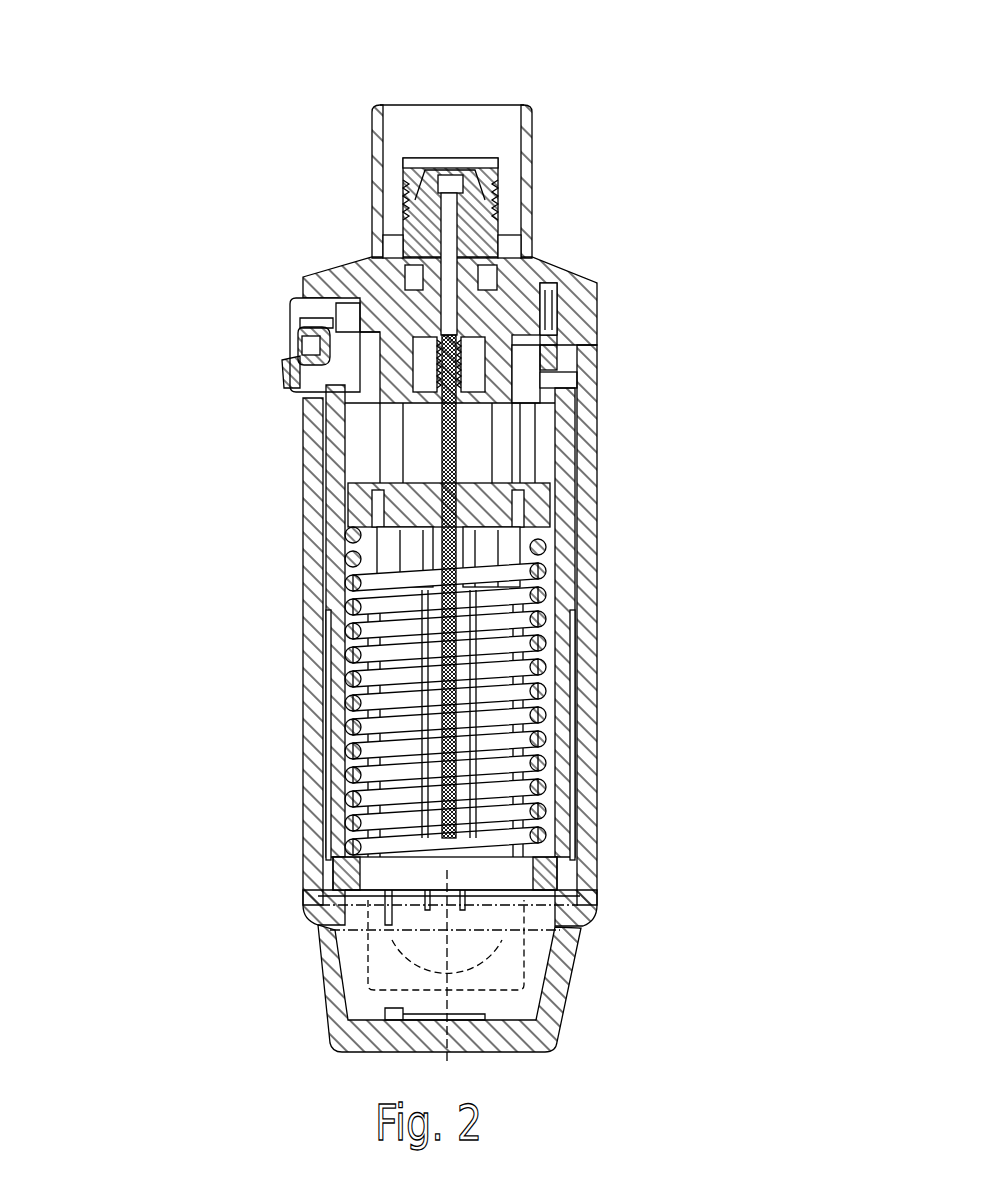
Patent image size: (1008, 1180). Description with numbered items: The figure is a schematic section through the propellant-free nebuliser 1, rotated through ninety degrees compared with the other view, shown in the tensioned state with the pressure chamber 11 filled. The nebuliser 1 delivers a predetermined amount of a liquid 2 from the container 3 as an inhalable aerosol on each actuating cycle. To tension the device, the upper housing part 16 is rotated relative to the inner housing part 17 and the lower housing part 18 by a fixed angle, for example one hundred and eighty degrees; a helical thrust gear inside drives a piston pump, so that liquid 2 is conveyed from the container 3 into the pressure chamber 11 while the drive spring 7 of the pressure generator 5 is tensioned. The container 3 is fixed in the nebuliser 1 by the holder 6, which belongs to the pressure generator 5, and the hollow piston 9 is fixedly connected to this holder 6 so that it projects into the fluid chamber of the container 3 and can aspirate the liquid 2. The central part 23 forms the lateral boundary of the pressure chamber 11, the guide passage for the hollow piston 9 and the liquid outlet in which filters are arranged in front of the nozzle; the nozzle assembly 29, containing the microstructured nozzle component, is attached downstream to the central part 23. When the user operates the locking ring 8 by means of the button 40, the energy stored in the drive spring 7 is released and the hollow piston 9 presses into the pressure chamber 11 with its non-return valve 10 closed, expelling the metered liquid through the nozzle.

The nebuliser 1 is at (484, 93).
The liquid 2 is at (547, 803).
The container 3 is at (573, 938).
The pressure generator 5 is at (565, 321).
The holder 6 is at (552, 513).
The drive spring 7 is at (340, 730).
The locking ring 8 is at (288, 375).
The hollow piston 9 is at (345, 630).
The non-return valve 10 is at (290, 312).
The pressure chamber 11 is at (385, 238).
The upper housing part 16 is at (570, 276).
The inner housing part 17 is at (562, 641).
The lower housing part 18 is at (595, 737).
The central part 23 is at (515, 238).
The nozzle assembly 29 is at (425, 152).
The button 40 is at (295, 345).